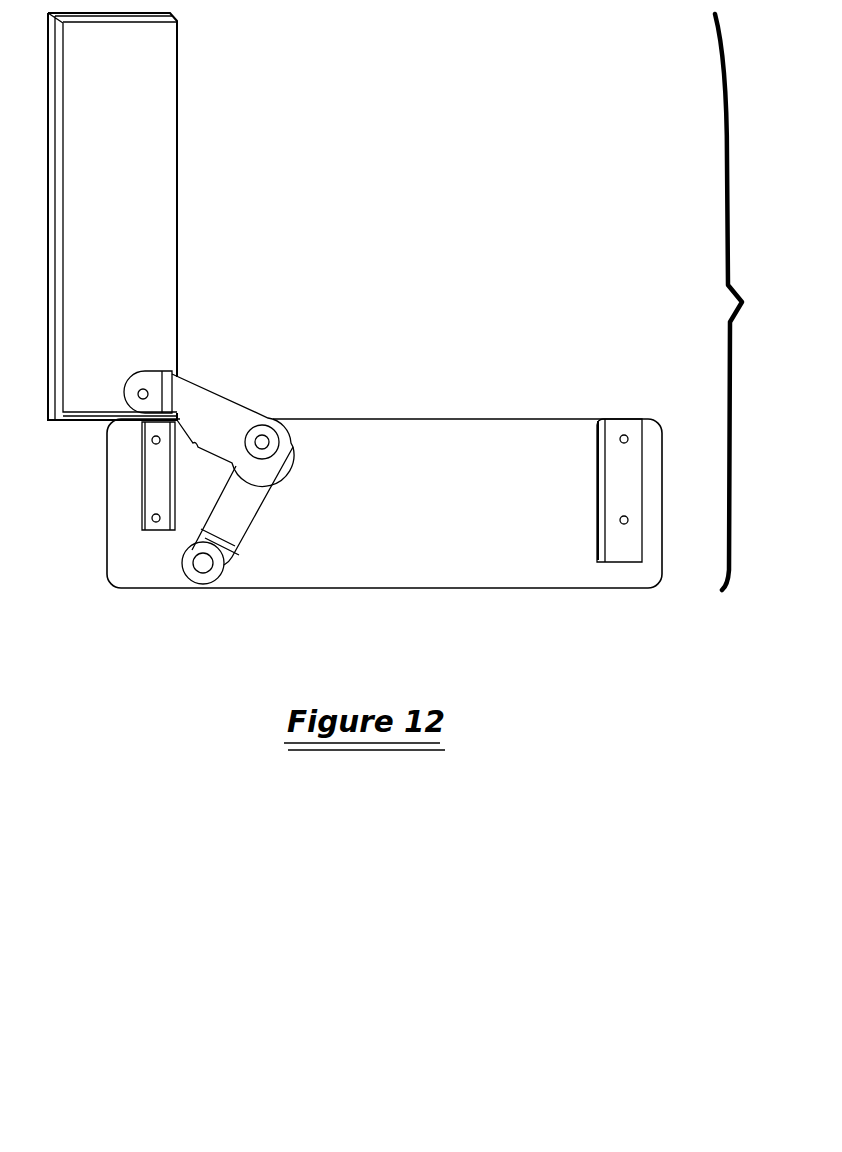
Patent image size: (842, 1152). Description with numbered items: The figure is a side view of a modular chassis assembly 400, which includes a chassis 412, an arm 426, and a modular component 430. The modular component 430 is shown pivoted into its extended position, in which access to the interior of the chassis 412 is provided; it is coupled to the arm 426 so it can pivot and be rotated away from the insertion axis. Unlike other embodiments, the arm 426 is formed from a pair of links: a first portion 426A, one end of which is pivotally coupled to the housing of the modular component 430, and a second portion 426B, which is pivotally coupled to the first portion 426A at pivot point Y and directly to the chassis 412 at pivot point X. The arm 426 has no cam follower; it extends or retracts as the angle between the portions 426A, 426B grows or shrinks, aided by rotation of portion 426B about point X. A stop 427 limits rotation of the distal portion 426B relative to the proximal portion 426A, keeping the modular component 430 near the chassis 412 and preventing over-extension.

The modular chassis assembly 400 is at (748, 302).
The chassis 412 is at (483, 510).
The arm 426 is at (213, 442).
The first portion 426A is at (192, 425).
The second portion 426B is at (267, 514).
The stop 427 is at (278, 481).
The modular component 430 is at (129, 207).